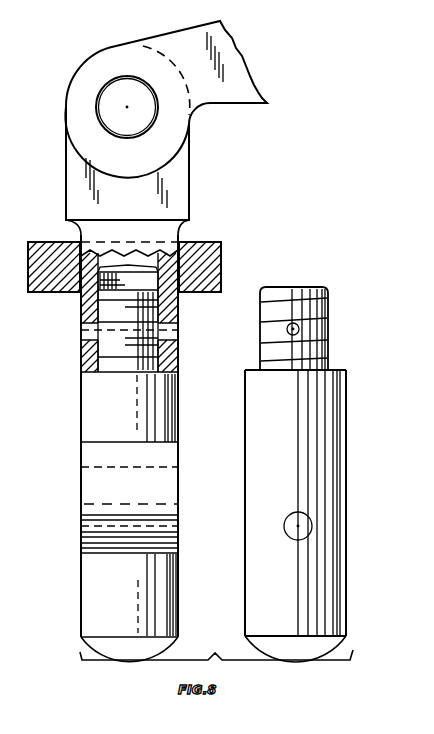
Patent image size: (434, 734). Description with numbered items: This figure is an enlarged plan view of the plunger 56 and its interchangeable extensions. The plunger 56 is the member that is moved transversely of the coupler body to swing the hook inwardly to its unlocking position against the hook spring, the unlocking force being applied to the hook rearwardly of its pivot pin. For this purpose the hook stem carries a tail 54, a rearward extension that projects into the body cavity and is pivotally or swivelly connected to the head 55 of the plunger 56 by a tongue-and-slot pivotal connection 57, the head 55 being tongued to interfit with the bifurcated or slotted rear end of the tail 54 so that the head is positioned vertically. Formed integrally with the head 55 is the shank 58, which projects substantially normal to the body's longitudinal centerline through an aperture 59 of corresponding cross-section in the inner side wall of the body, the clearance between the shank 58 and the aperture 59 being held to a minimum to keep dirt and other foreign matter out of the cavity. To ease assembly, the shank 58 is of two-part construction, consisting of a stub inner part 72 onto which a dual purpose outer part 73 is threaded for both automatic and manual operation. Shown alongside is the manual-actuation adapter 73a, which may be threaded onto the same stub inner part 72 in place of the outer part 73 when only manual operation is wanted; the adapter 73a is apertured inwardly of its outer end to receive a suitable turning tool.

The tail 54 is at (199, 96).
The head 55 is at (73, 192).
The plunger 56 is at (80, 398).
The tongue-and-slot pivotal connection 57 is at (98, 102).
The shank 58 is at (149, 413).
The aperture 59 is at (181, 291).
The stub inner part 72 is at (85, 312).
The dual purpose outer part 73 is at (167, 577).
The manual-actuation adapter 73a is at (342, 493).